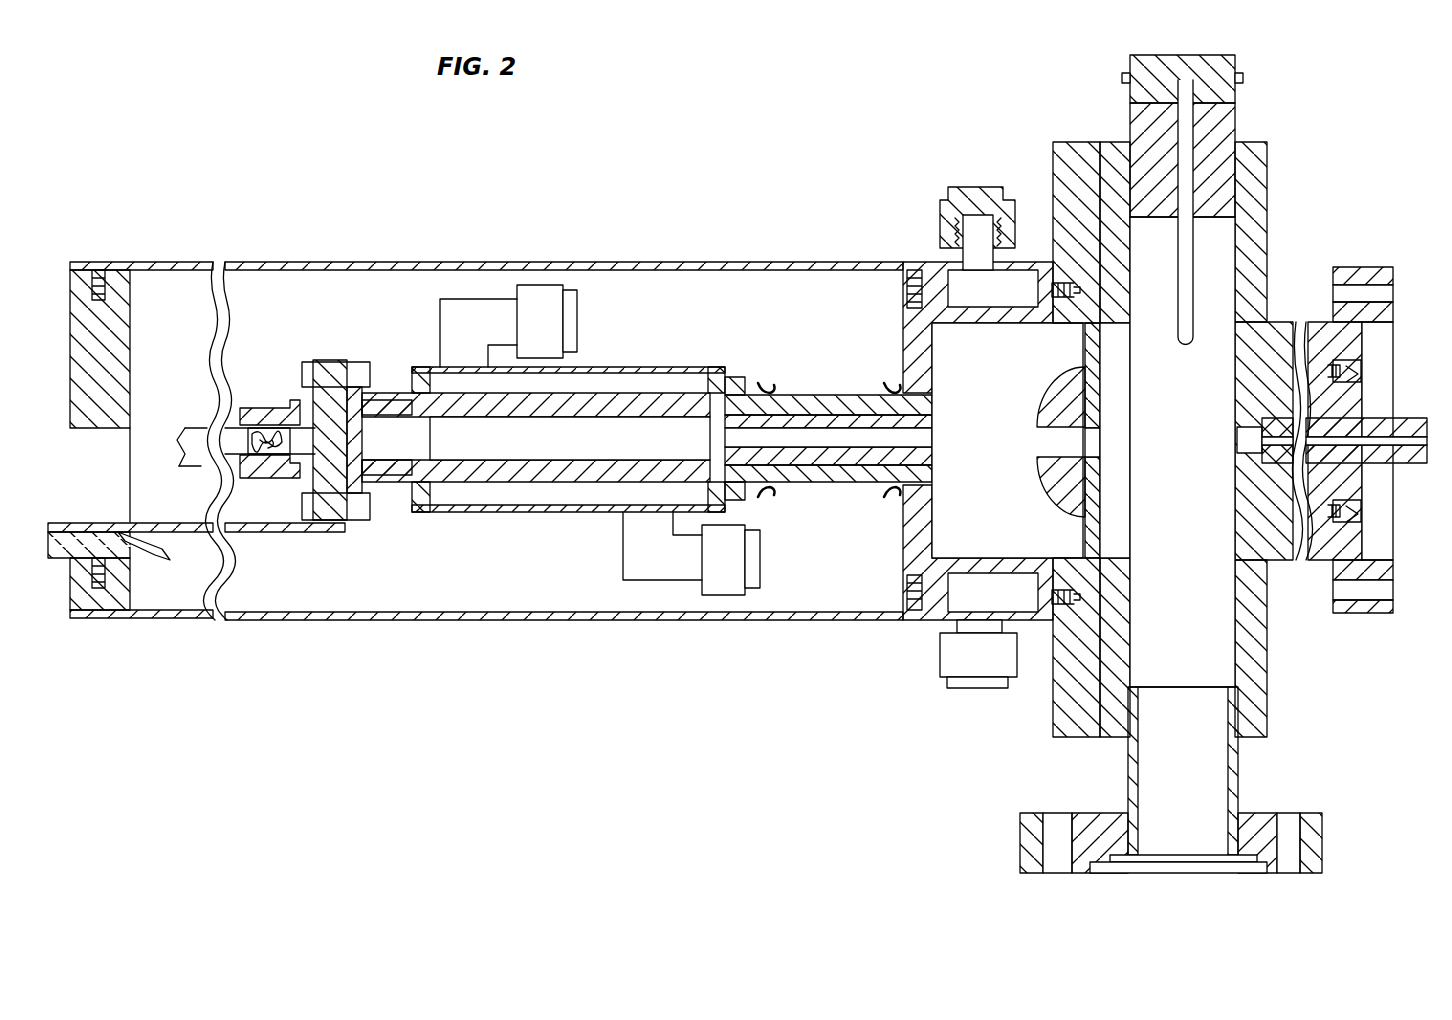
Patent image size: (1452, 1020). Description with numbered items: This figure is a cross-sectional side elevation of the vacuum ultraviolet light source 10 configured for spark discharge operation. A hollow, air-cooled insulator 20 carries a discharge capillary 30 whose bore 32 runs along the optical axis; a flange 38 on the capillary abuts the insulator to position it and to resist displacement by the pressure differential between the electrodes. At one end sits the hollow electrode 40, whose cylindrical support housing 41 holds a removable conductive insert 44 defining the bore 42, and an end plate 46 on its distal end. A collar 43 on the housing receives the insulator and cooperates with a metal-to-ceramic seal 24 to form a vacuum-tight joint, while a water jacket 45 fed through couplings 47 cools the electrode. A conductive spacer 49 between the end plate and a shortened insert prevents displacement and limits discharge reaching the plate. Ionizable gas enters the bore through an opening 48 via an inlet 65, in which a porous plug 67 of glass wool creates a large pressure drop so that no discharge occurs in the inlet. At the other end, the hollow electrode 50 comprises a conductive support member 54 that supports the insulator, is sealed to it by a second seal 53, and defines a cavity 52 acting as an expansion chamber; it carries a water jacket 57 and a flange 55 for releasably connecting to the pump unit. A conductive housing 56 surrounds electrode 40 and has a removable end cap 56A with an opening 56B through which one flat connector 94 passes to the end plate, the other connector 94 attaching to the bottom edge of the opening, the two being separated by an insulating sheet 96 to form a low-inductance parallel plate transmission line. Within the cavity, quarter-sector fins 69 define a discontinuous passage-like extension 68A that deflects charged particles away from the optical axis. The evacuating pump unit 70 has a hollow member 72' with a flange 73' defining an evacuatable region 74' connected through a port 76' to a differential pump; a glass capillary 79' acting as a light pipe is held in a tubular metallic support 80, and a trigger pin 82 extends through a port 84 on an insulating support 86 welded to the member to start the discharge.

The ultraviolet light source 10 is at (422, 238).
The insulator 20 is at (820, 498).
The metal-to-ceramic seal 24 is at (770, 385).
The discharge capillary 30 is at (933, 455).
The bore 32 is at (933, 440).
The flange 38 is at (705, 418).
The hollow electrode 40 is at (533, 510).
The support housing 41 is at (410, 505).
The bore 42 is at (562, 451).
The annular flange or collar 43 is at (746, 378).
The electrically-conductive insert 44 is at (440, 418).
The water jacket 45 is at (648, 383).
The end plate 46 is at (302, 395).
The couplings 47 is at (578, 312).
The opening 48 is at (345, 451).
The electrically conductive spacer 49 is at (376, 462).
The hollow electrode 50 is at (1054, 138).
The cavity 52 is at (980, 374).
The metal-to-ceramic seal 53 is at (883, 390).
The support member 54 is at (904, 380).
The flange 55 is at (1052, 190).
The housing 56 is at (745, 262).
The end cap 56A is at (76, 430).
The opening 56B is at (116, 514).
The water jacket 57 is at (1000, 296).
The inlet 65 is at (194, 427).
The porous plug 67 is at (258, 428).
The discontinuous passage-like extension 68A is at (1042, 443).
The fins 69 is at (1058, 382).
The evacuating pump unit 70 is at (1314, 678).
The hollow member 72' is at (1213, 439).
The flange 73' is at (1342, 406).
The evacuatable region 74' is at (1182, 452).
The port 76' is at (1219, 771).
The capillary 79' is at (1348, 414).
The tubular metallic support 80 is at (1368, 392).
The trigger pin 82 is at (1178, 290).
The port 84 is at (1227, 248).
The insulating support 86 is at (1237, 108).
The plate-like connectors 94 is at (280, 533).
The insulating sheet 96 is at (158, 556).